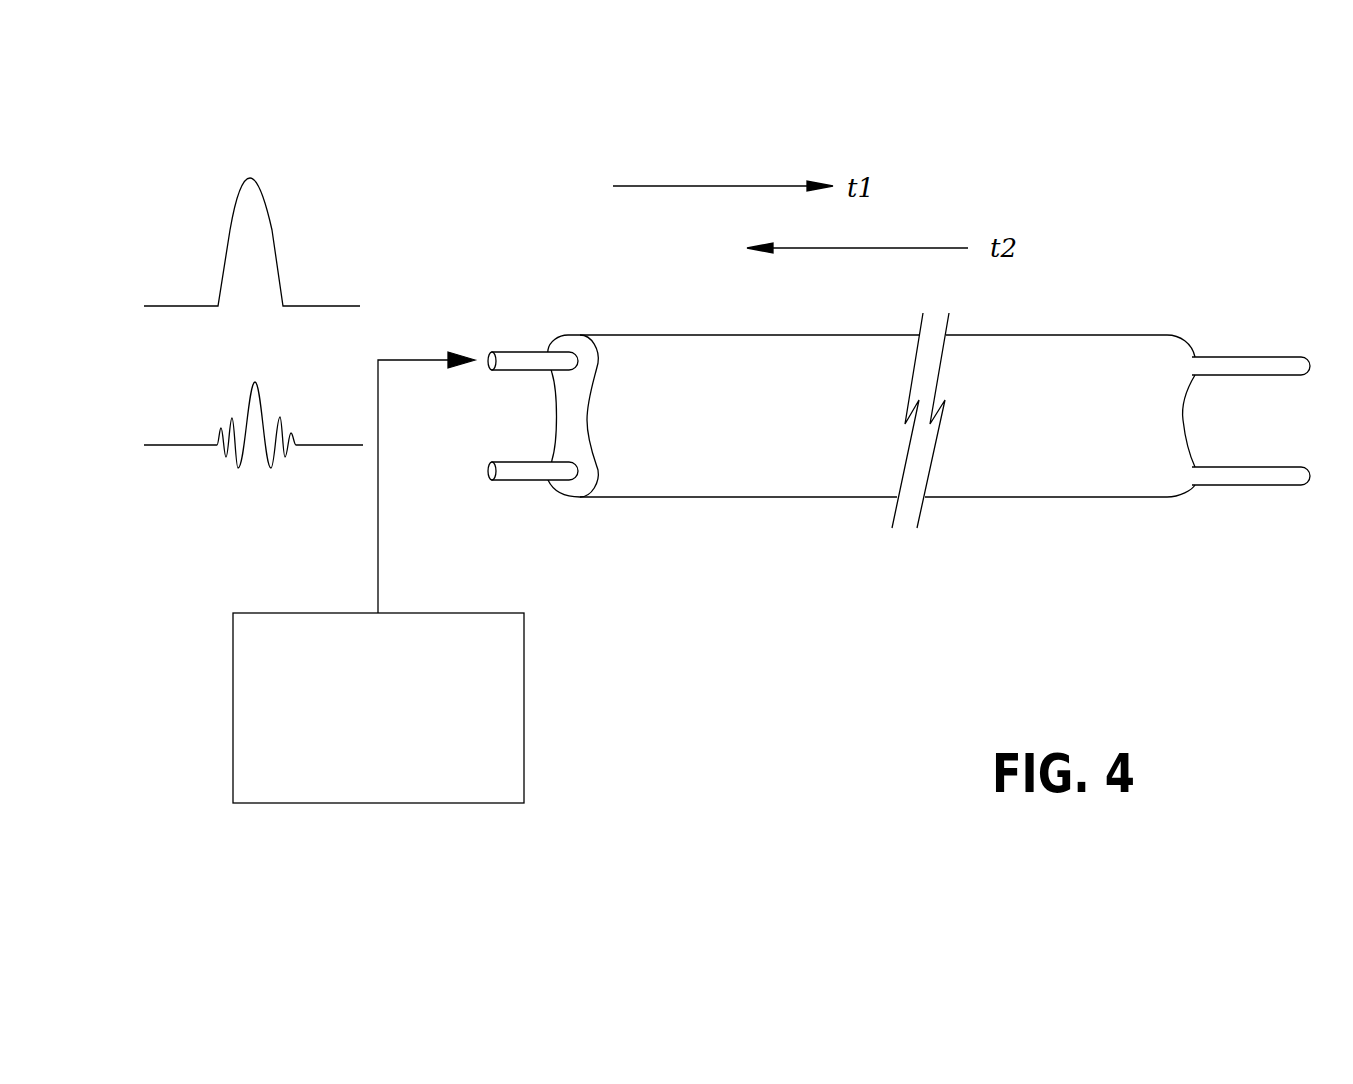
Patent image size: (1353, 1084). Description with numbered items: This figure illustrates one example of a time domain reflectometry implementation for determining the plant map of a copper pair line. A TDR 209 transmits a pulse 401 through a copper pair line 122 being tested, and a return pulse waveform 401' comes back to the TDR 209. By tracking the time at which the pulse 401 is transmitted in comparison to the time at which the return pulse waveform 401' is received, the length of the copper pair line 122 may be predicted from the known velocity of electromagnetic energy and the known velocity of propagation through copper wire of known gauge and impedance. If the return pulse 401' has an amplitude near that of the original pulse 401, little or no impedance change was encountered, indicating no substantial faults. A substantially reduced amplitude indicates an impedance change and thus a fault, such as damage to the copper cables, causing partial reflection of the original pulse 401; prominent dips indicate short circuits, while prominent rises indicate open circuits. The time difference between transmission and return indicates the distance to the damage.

The pulse 401 is at (244, 259).
The return pulse waveform 401' is at (228, 438).
The copper pair line 122 is at (1184, 277).
The TDR 209 is at (524, 698).